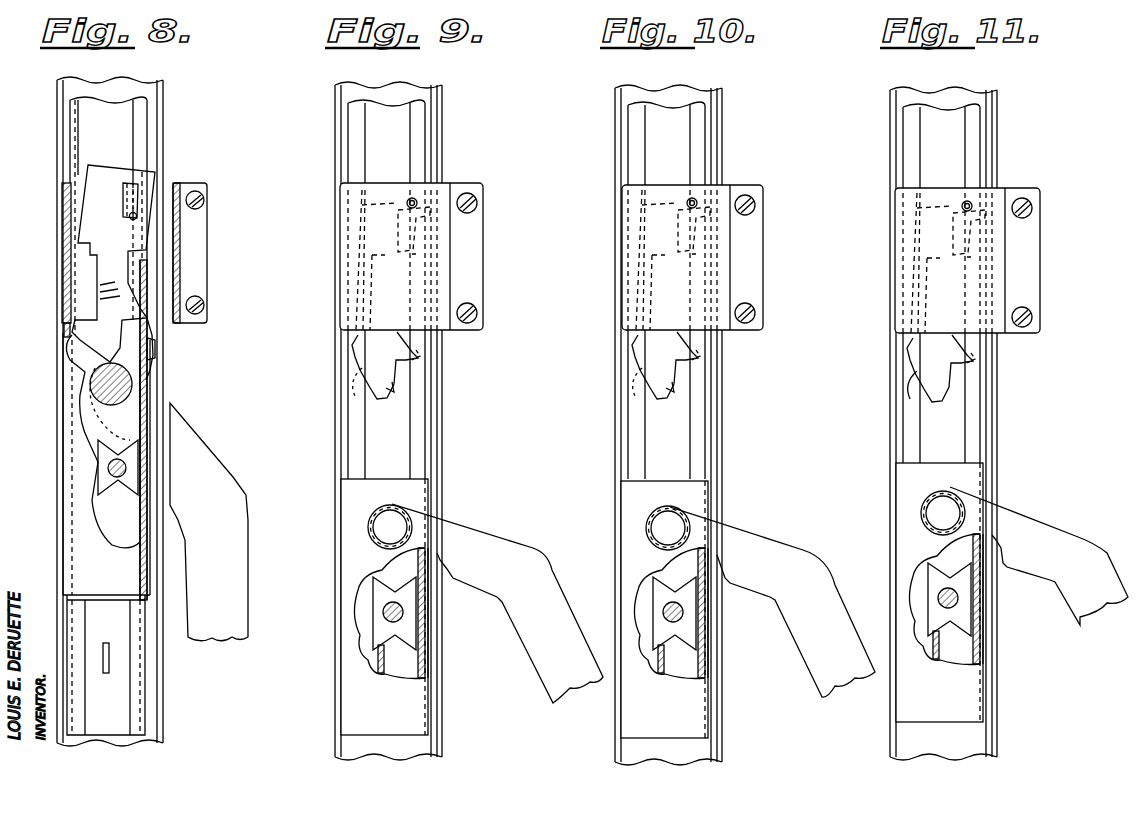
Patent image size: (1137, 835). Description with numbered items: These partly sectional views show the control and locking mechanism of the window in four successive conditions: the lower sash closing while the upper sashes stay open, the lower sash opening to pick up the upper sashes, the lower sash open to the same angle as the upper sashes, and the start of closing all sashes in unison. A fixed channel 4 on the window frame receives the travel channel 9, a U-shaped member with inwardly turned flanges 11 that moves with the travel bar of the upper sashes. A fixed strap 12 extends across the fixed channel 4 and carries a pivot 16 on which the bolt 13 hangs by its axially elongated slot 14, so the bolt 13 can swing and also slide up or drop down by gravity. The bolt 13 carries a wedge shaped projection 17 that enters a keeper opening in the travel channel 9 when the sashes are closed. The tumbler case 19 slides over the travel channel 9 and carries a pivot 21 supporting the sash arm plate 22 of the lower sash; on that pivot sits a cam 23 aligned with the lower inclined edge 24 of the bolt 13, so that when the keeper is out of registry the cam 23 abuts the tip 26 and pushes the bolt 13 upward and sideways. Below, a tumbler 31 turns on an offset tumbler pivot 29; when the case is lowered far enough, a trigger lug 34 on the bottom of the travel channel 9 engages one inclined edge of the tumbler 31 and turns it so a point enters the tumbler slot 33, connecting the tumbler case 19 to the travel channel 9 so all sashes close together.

In FIG. 8, the fixed channel 4 is at (163, 128).
In FIG. 9, the fixed channel 4 is at (442, 128).
In FIG. 10, the fixed channel 4 is at (686, 425).
In FIG. 11, the fixed channel 4 is at (961, 423).
In FIG. 8, the travel channel 9 is at (148, 146).
In FIG. 9, the travel channel 9 is at (428, 152).
In FIG. 10, the travel channel 9 is at (688, 425).
In FIG. 11, the travel channel 9 is at (963, 423).
In FIG. 8, the inwardly turned flanges 11 is at (104, 348).
In FIG. 9, the inwardly turned flanges 11 is at (355, 120).
In FIG. 10, the inwardly turned flanges 11 is at (675, 284).
In FIG. 11, the inwardly turned flanges 11 is at (949, 276).
In FIG. 8, the fixed strap 12 is at (180, 268).
In FIG. 9, the fixed strap 12 is at (411, 256).
In FIG. 10, the fixed strap 12 is at (668, 257).
In FIG. 11, the fixed strap 12 is at (991, 260).
In FIG. 8, the bolt 13 is at (100, 268).
In FIG. 9, the bolt 13 is at (382, 340).
In FIG. 10, the bolt 13 is at (631, 365).
In FIG. 11, the bolt 13 is at (906, 368).
In FIG. 8, the axially elongated slot 14 is at (123, 197).
In FIG. 8, the pivot 16 is at (137, 216).
In FIG. 9, the pivot 16 is at (417, 205).
In FIG. 11, the pivot 16 is at (1019, 208).
In FIG. 8, the wedge shaped projection 17 is at (145, 322).
In FIG. 9, the wedge shaped projection 17 is at (420, 356).
In FIG. 10, the wedge shaped projection 17 is at (733, 356).
In FIG. 11, the wedge shaped projection 17 is at (1008, 359).
In FIG. 8, the tumbler case 19 is at (100, 563).
In FIG. 9, the tumbler case 19 is at (392, 710).
In FIG. 10, the tumbler case 19 is at (664, 609).
In FIG. 11, the tumbler case 19 is at (914, 592).
In FIG. 9, the pivot 21 is at (389, 527).
In FIG. 10, the pivot 21 is at (632, 528).
In FIG. 11, the pivot 21 is at (907, 514).
In FIG. 8, the sash arm plate 22 is at (232, 553).
In FIG. 9, the sash arm plate 22 is at (545, 668).
In FIG. 10, the sash arm plate 22 is at (772, 608).
In FIG. 11, the sash arm plate 22 is at (1039, 556).
In FIG. 8, the cam 23 is at (95, 387).
In FIG. 8, the lower inclined edge 24 is at (85, 355).
In FIG. 9, the lower inclined edge 24 is at (380, 392).
In FIG. 10, the lower inclined edge 24 is at (610, 396).
In FIG. 11, the lower inclined edge 24 is at (885, 393).
In FIG. 8, the tip 26 is at (125, 360).
In FIG. 9, the tip 26 is at (394, 388).
In FIG. 10, the tip 26 is at (714, 394).
In FIG. 8, the tumbler pivot 29 is at (108, 470).
In FIG. 9, the tumbler pivot 29 is at (392, 615).
In FIG. 10, the tumbler pivot 29 is at (712, 621).
In FIG. 11, the tumbler pivot 29 is at (987, 609).
In FIG. 8, the tumbler 31 is at (98, 455).
In FIG. 9, the tumbler 31 is at (372, 593).
In FIG. 10, the tumbler 31 is at (696, 613).
In FIG. 11, the tumbler 31 is at (975, 599).
In FIG. 8, the tumbler slot 33 is at (148, 640).
In FIG. 9, the tumbler slot 33 is at (425, 640).
In FIG. 10, the tumbler slot 33 is at (732, 613).
In FIG. 11, the tumbler slot 33 is at (969, 621).
In FIG. 8, the trigger lug 34 is at (109, 663).
In FIG. 9, the trigger lug 34 is at (378, 660).
In FIG. 10, the trigger lug 34 is at (712, 661).
In FIG. 11, the trigger lug 34 is at (929, 662).